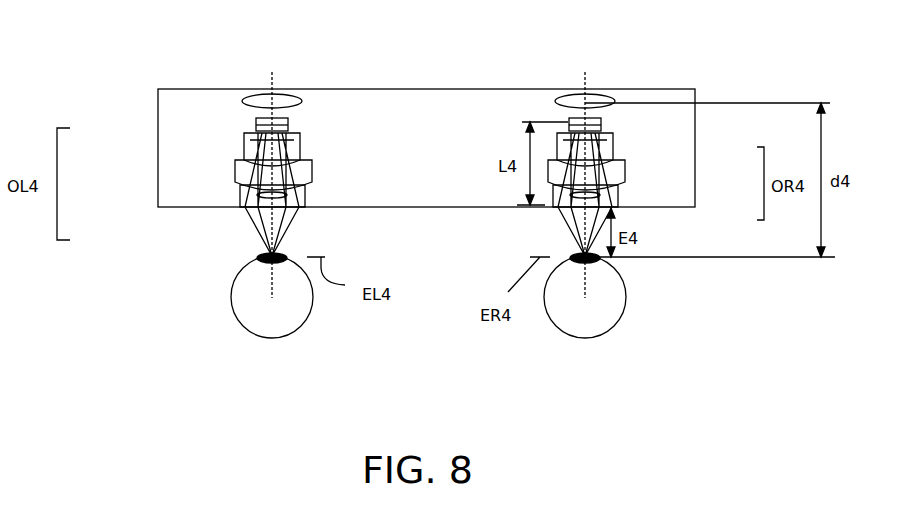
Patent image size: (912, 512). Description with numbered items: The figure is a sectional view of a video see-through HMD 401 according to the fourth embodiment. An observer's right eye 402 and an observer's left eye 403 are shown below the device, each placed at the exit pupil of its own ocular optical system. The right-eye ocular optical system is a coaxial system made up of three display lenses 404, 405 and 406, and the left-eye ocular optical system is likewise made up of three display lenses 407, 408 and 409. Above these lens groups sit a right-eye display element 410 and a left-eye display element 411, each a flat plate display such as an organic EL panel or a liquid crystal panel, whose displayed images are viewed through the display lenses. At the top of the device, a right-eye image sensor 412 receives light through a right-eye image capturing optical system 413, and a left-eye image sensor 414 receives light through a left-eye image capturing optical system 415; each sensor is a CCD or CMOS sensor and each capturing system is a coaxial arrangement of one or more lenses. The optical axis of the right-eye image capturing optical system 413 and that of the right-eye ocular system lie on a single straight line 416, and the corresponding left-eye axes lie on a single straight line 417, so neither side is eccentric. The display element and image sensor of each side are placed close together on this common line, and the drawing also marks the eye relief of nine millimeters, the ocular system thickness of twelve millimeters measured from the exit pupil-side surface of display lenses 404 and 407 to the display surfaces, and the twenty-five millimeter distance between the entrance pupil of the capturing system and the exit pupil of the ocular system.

The video see-through HMD 401 is at (170, 122).
The observer's right eye 402 is at (621, 311).
The observer's left eye 403 is at (298, 301).
The display lens 404 is at (649, 194).
The display lens 405 is at (651, 186).
The display lens 406 is at (651, 168).
The display lens 407 is at (248, 202).
The display lens 408 is at (238, 166).
The display lens 409 is at (245, 142).
The right-eye display element 410 is at (667, 146).
The left-eye display element 411 is at (298, 135).
The right-eye image sensor 412 is at (648, 79).
The right-eye image capturing optical system 413 is at (609, 83).
The left-eye image sensor 414 is at (250, 118).
The left-eye image capturing optical system 415 is at (300, 101).
The straight line 416 is at (612, 163).
The straight line 417 is at (274, 75).